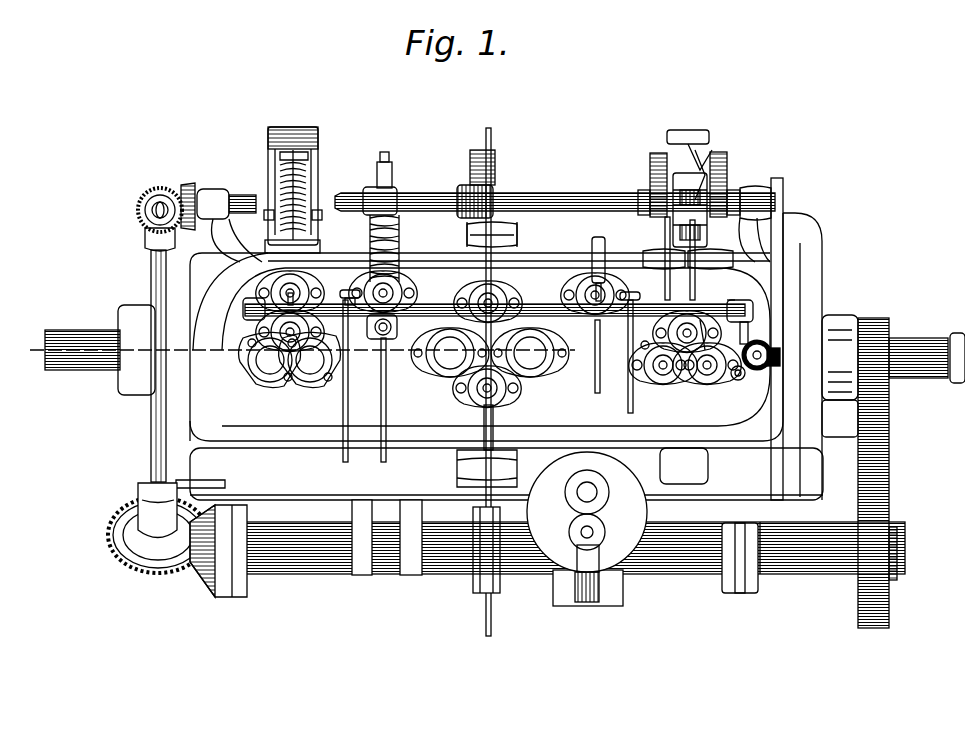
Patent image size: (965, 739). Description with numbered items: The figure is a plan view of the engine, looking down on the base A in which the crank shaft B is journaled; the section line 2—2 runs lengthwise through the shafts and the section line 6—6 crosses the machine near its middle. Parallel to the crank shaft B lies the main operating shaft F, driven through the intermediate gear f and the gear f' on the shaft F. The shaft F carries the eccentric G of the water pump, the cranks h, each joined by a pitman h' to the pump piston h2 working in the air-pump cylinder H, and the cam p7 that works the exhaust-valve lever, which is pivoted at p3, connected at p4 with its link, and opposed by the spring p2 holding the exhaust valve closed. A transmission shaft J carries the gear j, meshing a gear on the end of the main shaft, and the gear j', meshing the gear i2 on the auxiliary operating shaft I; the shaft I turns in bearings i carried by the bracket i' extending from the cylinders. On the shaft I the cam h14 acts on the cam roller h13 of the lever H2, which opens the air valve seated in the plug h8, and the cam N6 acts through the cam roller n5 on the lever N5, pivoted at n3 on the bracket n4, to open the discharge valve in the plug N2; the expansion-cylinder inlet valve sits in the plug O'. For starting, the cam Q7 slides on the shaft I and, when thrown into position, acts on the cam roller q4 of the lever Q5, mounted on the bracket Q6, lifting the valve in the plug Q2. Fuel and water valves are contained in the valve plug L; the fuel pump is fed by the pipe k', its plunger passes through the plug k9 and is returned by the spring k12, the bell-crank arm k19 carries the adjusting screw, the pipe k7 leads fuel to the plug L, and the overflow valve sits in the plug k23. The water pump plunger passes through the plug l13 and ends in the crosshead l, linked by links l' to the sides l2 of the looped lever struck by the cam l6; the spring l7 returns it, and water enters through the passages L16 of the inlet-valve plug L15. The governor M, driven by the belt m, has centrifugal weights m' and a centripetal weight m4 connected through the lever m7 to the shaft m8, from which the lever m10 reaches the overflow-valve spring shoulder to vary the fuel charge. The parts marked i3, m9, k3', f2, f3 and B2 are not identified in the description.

The base A is at (499, 356).
The pump piston h2 is at (674, 466).
The belt m is at (801, 339).
The section line 2 is at (300, 350).
The transmission shaft J is at (150, 418).
The gear j' is at (142, 219).
The gear i2 is at (188, 183).
The bearings i is at (213, 180).
The bracket i' is at (509, 201).
The crosshead l is at (490, 168).
The spring l7 is at (310, 158).
The links l' is at (314, 185).
The plug l13 is at (310, 188).
The loop sides l2 is at (265, 215).
The cam l6 is at (705, 160).
The auxiliary operating shaft I is at (560, 195).
The bell crank arm k19 is at (392, 172).
The spring k12 is at (400, 222).
The cam roller q4 is at (470, 160).
The cam Q7 is at (494, 196).
The section line 6 is at (489, 384).
The bracket Q6 is at (517, 228).
The lever Q5 is at (517, 240).
The cam roller n5 is at (655, 153).
The cam roller h13 is at (727, 160).
The cam h14 is at (707, 185).
The sleeve i3 is at (760, 205).
The cam N6 is at (667, 212).
The bracket n4 is at (643, 258).
The pivot n3 is at (690, 252).
The plug k9 is at (592, 262).
The centrifugal weights m' is at (528, 324).
The rod end block m9 is at (275, 328).
The lever m7 is at (750, 332).
The lever H2 is at (690, 340).
The inlet valve plug L15 is at (735, 300).
The passages L16 is at (292, 278).
The valve plug k23 is at (392, 285).
The lever m10 is at (398, 293).
The plug Q2 is at (500, 300).
The shaft m8 is at (397, 325).
The valve plug L is at (262, 358).
The valve plug N2 is at (314, 378).
The plug h8 is at (278, 372).
The pipe k7 is at (348, 368).
The rod k3' is at (507, 381).
The plug O' is at (490, 369).
The pipe k' is at (581, 362).
The spring p2 is at (505, 395).
The lever N5 is at (660, 385).
The governor M is at (762, 368).
The weight m4 is at (780, 357).
The pivot p3 is at (493, 425).
The connection p4 is at (517, 468).
The cam p7 is at (478, 590).
The lower shaft f2 is at (305, 575).
The cranks h is at (487, 564).
The pitman h' is at (583, 604).
The pump cylinder H is at (587, 512).
The eccentric G is at (738, 593).
The main operating shaft F is at (762, 578).
The gear j is at (141, 528).
The bevel gear f3 is at (205, 592).
The hub B2 is at (860, 395).
The intermediate gear f is at (886, 473).
The gear f' is at (902, 541).
The crank shaft B is at (920, 338).